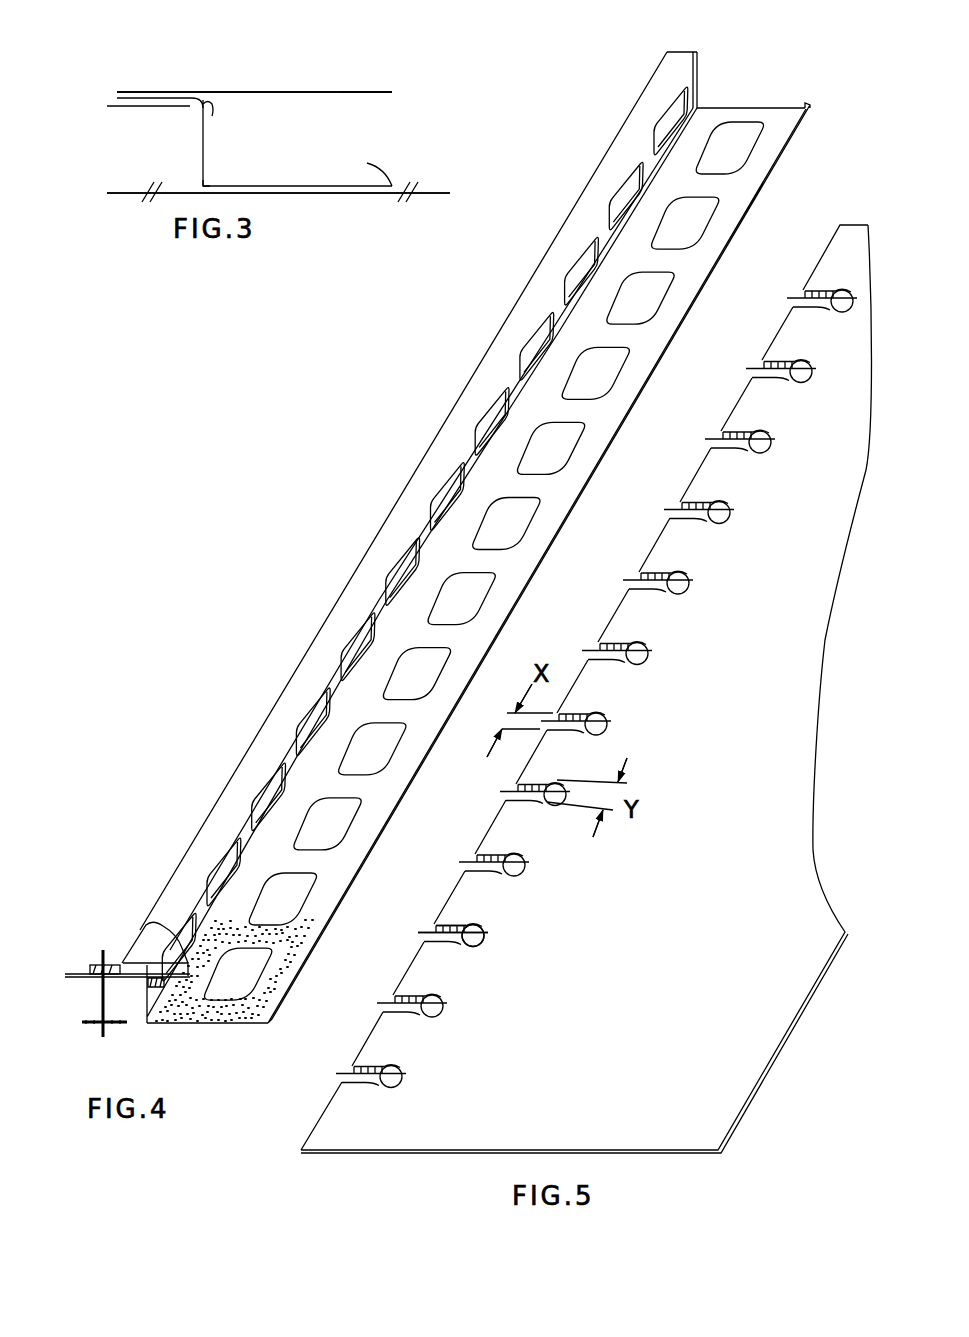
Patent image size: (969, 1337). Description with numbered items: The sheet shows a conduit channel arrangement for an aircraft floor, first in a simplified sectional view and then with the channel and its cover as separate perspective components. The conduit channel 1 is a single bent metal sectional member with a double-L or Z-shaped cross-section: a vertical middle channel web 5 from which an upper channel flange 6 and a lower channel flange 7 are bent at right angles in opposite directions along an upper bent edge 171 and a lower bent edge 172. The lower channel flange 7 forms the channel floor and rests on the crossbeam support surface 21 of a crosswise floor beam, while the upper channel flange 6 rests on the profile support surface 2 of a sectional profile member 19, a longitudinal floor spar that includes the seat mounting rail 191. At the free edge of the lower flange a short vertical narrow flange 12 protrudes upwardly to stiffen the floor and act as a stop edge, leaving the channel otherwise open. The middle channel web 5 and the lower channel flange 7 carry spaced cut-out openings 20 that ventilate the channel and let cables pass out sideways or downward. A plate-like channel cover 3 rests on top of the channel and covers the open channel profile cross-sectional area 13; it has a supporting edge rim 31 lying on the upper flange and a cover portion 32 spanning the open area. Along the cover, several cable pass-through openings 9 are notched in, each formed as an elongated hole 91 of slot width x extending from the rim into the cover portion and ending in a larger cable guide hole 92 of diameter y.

In FIG. 3, the conduit channel 1 is at (298, 57).
In FIG. 3, the profile support surface 2 is at (150, 110).
In FIG. 4, the profile support surface 2 is at (130, 978).
In FIG. 3, the channel cover 3 is at (232, 90).
In FIG. 4, the channel cover 3 is at (147, 940).
In FIG. 5, the channel cover 3 is at (743, 873).
In FIG. 3, the middle channel web 5 is at (203, 148).
In FIG. 5, the middle channel web 5 is at (245, 822).
In FIG. 5, the upper channel flange 6 is at (440, 455).
In FIG. 3, the lower channel flange 7 is at (297, 186).
In FIG. 5, the lower channel flange 7 is at (782, 122).
In FIG. 5, the cable pass-through opening 9 is at (462, 913).
In FIG. 3, the narrow flange 12 is at (365, 167).
In FIG. 5, the narrow flange 12 is at (534, 555).
In FIG. 3, the open channel profile cross-sectional area 13 is at (337, 137).
In FIG. 4, the sectional profile member 19 is at (78, 985).
In FIG. 5, the cut-out openings 20 is at (365, 645).
In FIG. 3, the crossbeam support surface 21 is at (437, 193).
In FIG. 3, the supporting edge rim 31 is at (162, 92).
In FIG. 3, the cover portion 32 is at (347, 92).
In FIG. 5, the elongated hole 91 is at (415, 931).
In FIG. 5, the cable guide hole 92 is at (486, 932).
In FIG. 3, the upper bent edge 171 is at (233, 119).
In FIG. 3, the lower bent edge 172 is at (203, 186).
In FIG. 4, the seat mounting rail 191 is at (110, 965).